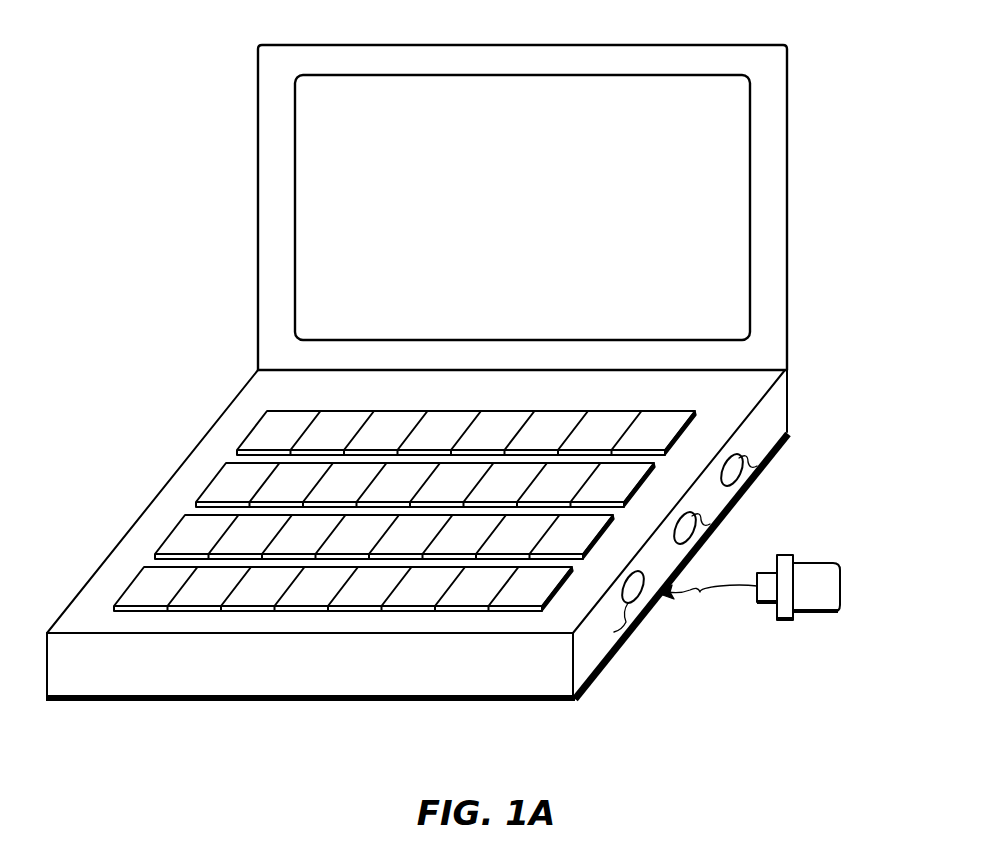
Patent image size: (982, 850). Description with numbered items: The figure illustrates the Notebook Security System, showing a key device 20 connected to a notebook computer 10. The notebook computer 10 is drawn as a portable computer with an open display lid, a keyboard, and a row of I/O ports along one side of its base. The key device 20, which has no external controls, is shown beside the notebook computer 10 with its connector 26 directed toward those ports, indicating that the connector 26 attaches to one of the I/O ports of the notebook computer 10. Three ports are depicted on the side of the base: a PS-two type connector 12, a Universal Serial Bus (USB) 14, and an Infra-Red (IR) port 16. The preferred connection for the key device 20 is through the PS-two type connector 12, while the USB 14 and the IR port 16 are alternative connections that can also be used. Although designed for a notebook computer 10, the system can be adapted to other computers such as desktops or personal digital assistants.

The notebook computer 10 is at (787, 110).
The PS-2 connector 12 is at (625, 636).
The Universal Serial Bus (USB) 14 is at (713, 530).
The Infra-Red (IR) port 16 is at (757, 478).
The key device 20 is at (840, 582).
The connector 26 is at (757, 603).